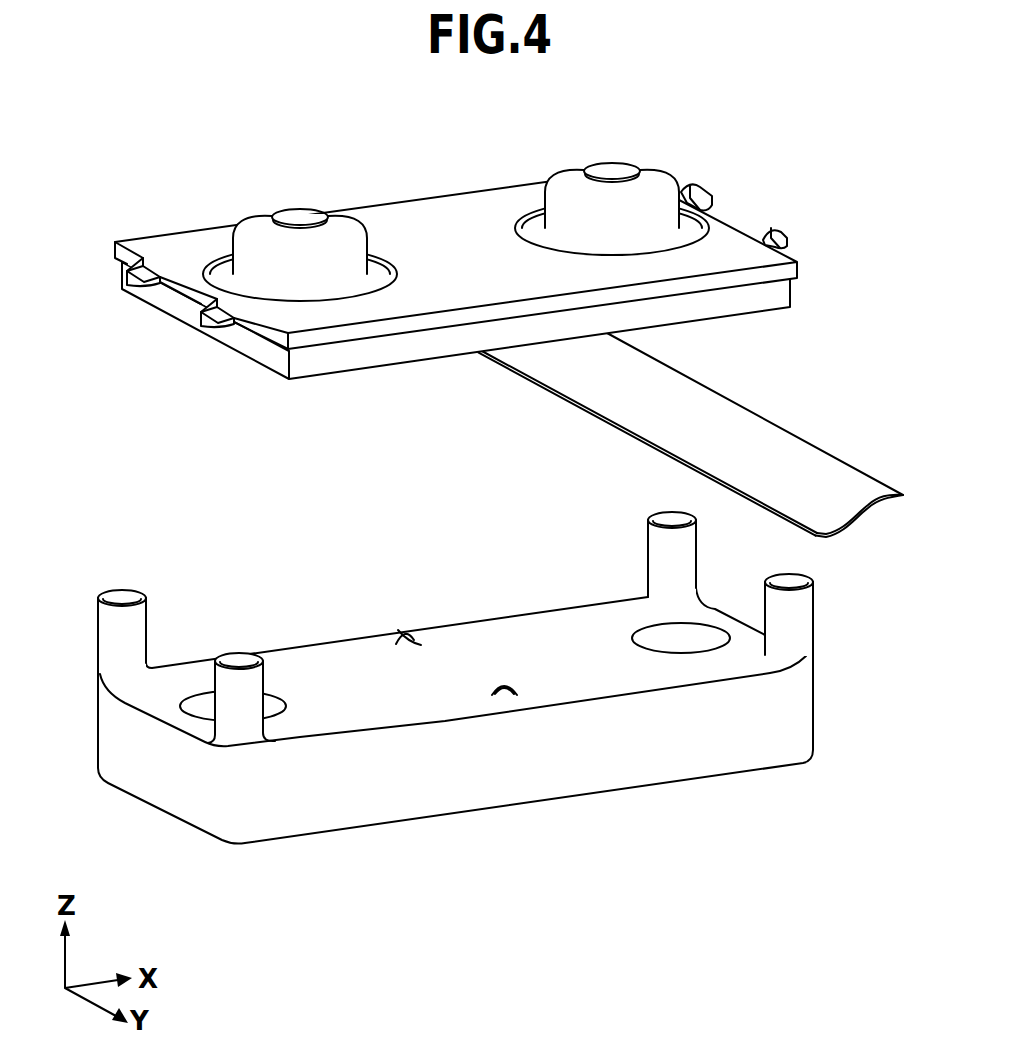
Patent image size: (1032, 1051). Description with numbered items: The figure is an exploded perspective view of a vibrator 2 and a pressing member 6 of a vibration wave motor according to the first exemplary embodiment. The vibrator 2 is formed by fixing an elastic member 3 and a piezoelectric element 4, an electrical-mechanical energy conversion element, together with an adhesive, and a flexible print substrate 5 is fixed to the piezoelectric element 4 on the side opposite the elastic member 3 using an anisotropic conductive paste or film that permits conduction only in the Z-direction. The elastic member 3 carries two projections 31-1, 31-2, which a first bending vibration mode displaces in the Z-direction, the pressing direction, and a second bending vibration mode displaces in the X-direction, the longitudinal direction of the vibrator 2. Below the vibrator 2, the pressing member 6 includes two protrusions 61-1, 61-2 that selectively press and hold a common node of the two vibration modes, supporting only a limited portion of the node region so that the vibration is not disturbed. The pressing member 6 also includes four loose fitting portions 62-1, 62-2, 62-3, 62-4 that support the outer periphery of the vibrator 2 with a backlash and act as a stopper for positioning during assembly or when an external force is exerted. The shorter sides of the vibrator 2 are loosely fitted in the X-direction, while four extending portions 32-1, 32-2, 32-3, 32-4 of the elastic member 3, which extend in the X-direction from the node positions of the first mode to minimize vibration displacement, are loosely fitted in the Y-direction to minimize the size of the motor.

The vibrator 2 is at (516, 275).
The elastic member 3 is at (777, 272).
The piezoelectric element 4 is at (777, 293).
The projection 31-1 is at (648, 185).
The projection 31-2 is at (342, 231).
The extending portion 32-1 is at (777, 230).
The extending portion 32-2 is at (705, 192).
The extending portion 32-3 is at (207, 325).
The extending portion 32-4 is at (127, 288).
The flexible print substrate 5 is at (615, 408).
The pressing member 6 is at (693, 758).
The protrusion 61-1 is at (503, 699).
The protrusion 61-2 is at (407, 635).
The loose fitting portion 62-1 is at (797, 627).
The loose fitting portion 62-2 is at (662, 560).
The loose fitting portion 62-3 is at (243, 698).
The loose fitting portion 62-4 is at (132, 640).